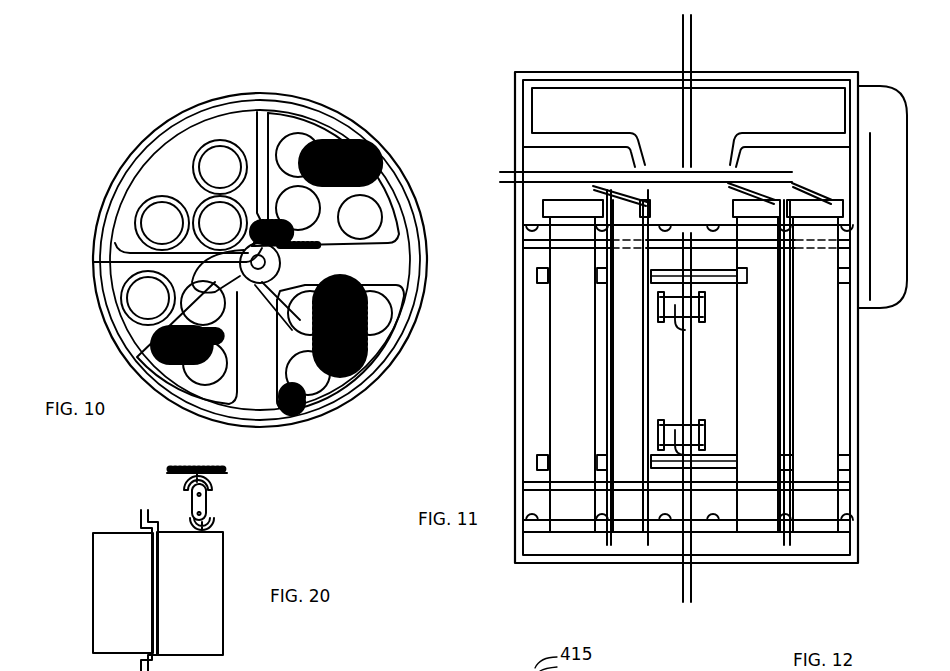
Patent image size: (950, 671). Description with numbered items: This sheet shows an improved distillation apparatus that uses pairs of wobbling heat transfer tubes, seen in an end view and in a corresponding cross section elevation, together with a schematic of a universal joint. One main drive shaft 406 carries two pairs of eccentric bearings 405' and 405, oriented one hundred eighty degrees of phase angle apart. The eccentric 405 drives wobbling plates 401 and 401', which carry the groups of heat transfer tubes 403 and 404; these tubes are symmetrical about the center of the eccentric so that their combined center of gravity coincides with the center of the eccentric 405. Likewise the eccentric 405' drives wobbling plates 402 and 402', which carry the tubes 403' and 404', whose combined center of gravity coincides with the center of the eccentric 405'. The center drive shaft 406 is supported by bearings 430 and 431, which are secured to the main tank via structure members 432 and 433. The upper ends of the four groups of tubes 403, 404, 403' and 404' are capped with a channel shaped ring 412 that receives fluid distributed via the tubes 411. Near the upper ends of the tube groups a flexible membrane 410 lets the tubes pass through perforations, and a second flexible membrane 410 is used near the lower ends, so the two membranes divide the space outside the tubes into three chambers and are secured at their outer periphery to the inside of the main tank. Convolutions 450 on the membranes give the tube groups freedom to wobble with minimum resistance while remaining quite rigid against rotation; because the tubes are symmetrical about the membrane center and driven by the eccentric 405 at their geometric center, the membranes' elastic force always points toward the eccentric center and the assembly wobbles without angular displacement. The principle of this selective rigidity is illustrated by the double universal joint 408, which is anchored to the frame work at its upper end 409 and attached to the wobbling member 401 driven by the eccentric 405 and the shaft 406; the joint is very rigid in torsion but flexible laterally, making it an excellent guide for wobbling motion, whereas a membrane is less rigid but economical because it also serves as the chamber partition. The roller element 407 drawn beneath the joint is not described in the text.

In FIG. 10, the flexible membrane 410 is at (233, 120).
In FIG. 11, the flexible membrane 410 is at (516, 196).
In FIG. 10, the convolutions 450 is at (138, 170).
In FIG. 11, the convolutions 450 is at (525, 242).
In FIG. 10, the channel shaped ring 412 is at (138, 218).
In FIG. 11, the channel shaped ring 412 is at (655, 212).
In FIG. 10, the wobbling plate 402 is at (341, 170).
In FIG. 10, the wobbling plate 402' is at (260, 179).
In FIG. 10, the heat transfer tubes 403' is at (382, 197).
In FIG. 10, the main drive shaft 406 is at (272, 250).
In FIG. 11, the main drive shaft 406 is at (688, 365).
In FIG. 10, the eccentric bearing 405 is at (277, 271).
In FIG. 11, the eccentric bearing 405 is at (717, 368).
In FIG. 20, the eccentric bearing 405 is at (172, 590).
In FIG. 10, the eccentric bearing 405' is at (269, 309).
In FIG. 11, the eccentric bearing 405' is at (707, 380).
In FIG. 10, the heat transfer tubes 404' is at (141, 343).
In FIG. 10, the heat transfer tubes 403 is at (375, 313).
In FIG. 11, the heat transfer tubes 403 is at (791, 372).
In FIG. 10, the wobbling plate 401 is at (385, 348).
In FIG. 11, the wobbling plate 401 is at (505, 275).
In FIG. 20, the wobbling plate 401 is at (182, 593).
In FIG. 10, the wobbling plate 401' is at (281, 355).
In FIG. 11, the wobbling plate 401' is at (505, 450).
In FIG. 11, the tubes 411 is at (640, 165).
In FIG. 11, the heat transfer tubes 404 is at (595, 367).
In FIG. 11, the bearing 430 is at (690, 257).
In FIG. 11, the structure member 432 is at (773, 250).
In FIG. 11, the bearing 431 is at (712, 498).
In FIG. 11, the structure member 433 is at (770, 480).
In FIG. 20, the upper end 409 is at (215, 488).
In FIG. 20, the universal joint 408 is at (212, 500).
In FIG. 20, the roller 407 is at (218, 522).